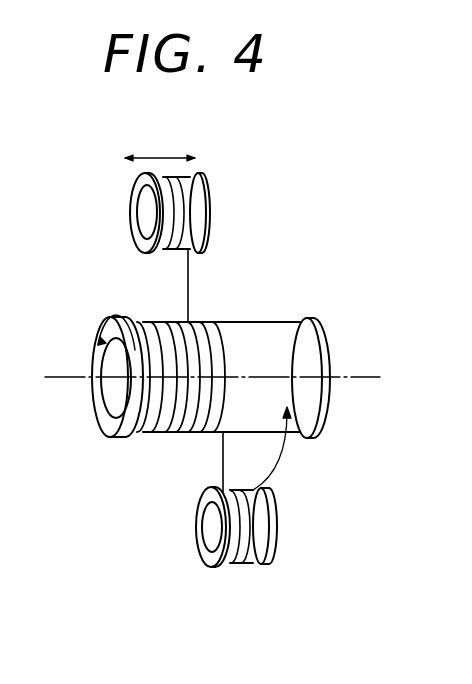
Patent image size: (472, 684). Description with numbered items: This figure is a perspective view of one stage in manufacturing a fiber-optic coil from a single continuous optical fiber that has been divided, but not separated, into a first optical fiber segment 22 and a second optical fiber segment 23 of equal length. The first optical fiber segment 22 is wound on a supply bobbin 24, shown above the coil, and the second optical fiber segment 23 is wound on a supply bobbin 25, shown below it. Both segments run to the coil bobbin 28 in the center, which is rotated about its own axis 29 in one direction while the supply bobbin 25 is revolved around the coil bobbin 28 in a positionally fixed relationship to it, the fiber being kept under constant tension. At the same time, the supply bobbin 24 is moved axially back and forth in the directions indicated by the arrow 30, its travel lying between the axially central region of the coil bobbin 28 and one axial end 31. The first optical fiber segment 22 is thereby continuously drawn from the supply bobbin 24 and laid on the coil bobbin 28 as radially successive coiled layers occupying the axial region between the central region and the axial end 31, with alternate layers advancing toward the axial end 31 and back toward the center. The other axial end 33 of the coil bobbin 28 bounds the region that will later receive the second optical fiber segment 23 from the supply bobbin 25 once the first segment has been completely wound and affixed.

The first optical fiber segment 22 is at (189, 283).
The second optical fiber segment 23 is at (222, 463).
The supply bobbin 24 is at (129, 214).
The supply bobbin 25 is at (278, 507).
The coil bobbin 28 is at (323, 332).
The axis 29 is at (62, 375).
The arrow 30 is at (164, 157).
The axial end 31 is at (103, 323).
The other axial end 33 is at (330, 402).